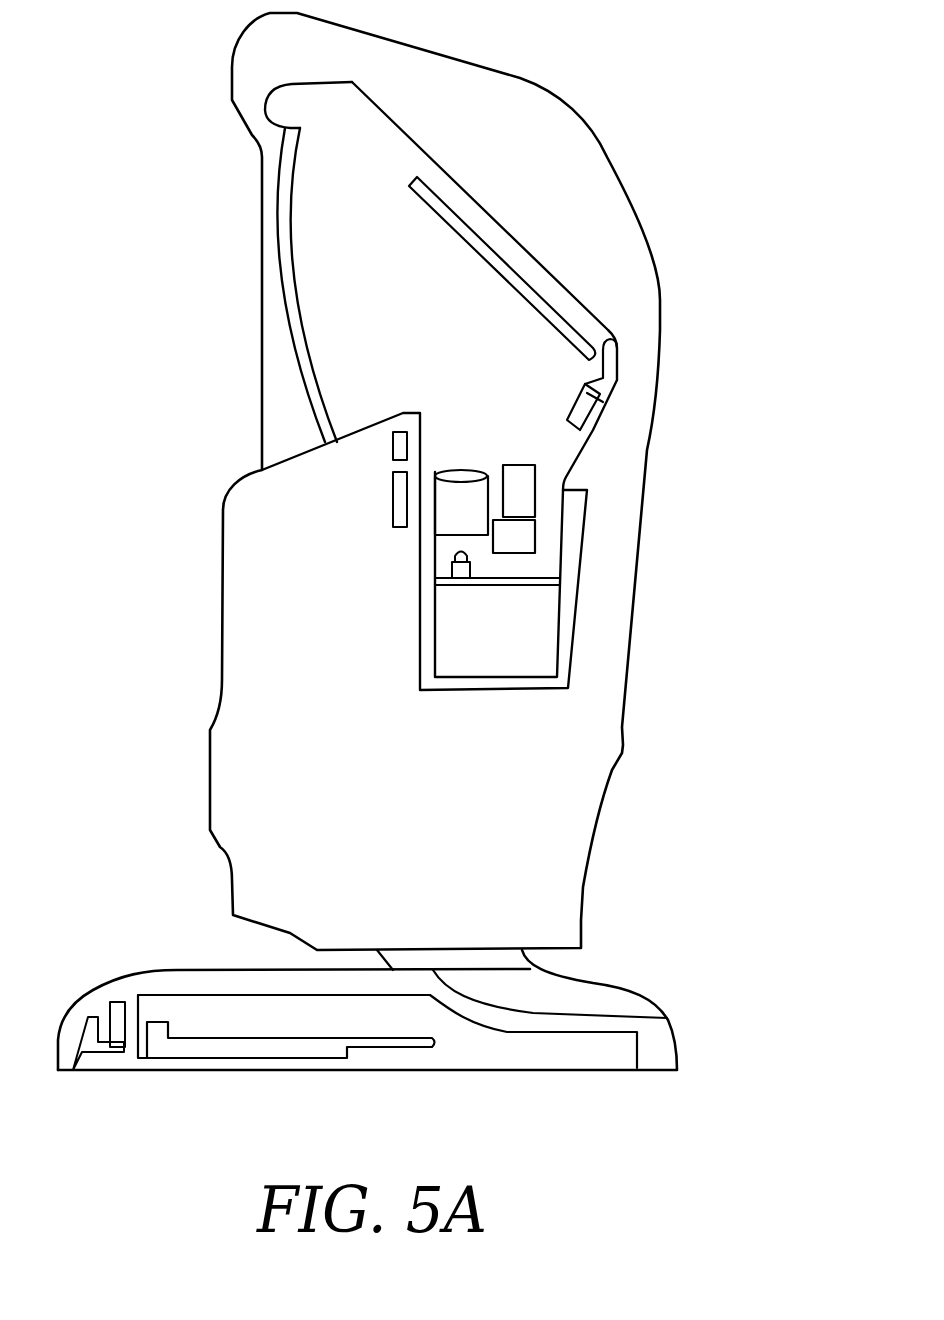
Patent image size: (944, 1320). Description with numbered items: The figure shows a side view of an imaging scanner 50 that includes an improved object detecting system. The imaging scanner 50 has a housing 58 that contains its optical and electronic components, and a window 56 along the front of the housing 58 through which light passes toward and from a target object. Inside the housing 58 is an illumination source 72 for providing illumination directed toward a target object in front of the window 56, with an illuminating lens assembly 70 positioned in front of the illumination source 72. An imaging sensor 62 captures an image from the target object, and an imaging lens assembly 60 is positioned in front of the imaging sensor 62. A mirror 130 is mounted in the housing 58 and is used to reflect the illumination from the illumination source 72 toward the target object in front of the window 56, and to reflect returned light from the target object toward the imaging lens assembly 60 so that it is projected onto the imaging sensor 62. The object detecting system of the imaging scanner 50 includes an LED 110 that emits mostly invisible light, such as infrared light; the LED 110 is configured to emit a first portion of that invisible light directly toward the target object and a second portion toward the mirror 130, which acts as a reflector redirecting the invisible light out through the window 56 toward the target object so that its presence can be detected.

The imaging scanner 50 is at (434, 541).
The window 56 is at (282, 207).
The housing 58 is at (622, 698).
The imaging lens assembly 60 is at (535, 500).
The imaging sensor 62 is at (535, 537).
The illuminating lens assembly 70 is at (443, 510).
The illumination source 72 is at (460, 570).
The LED 110 is at (583, 417).
The mirror 130 is at (488, 243).